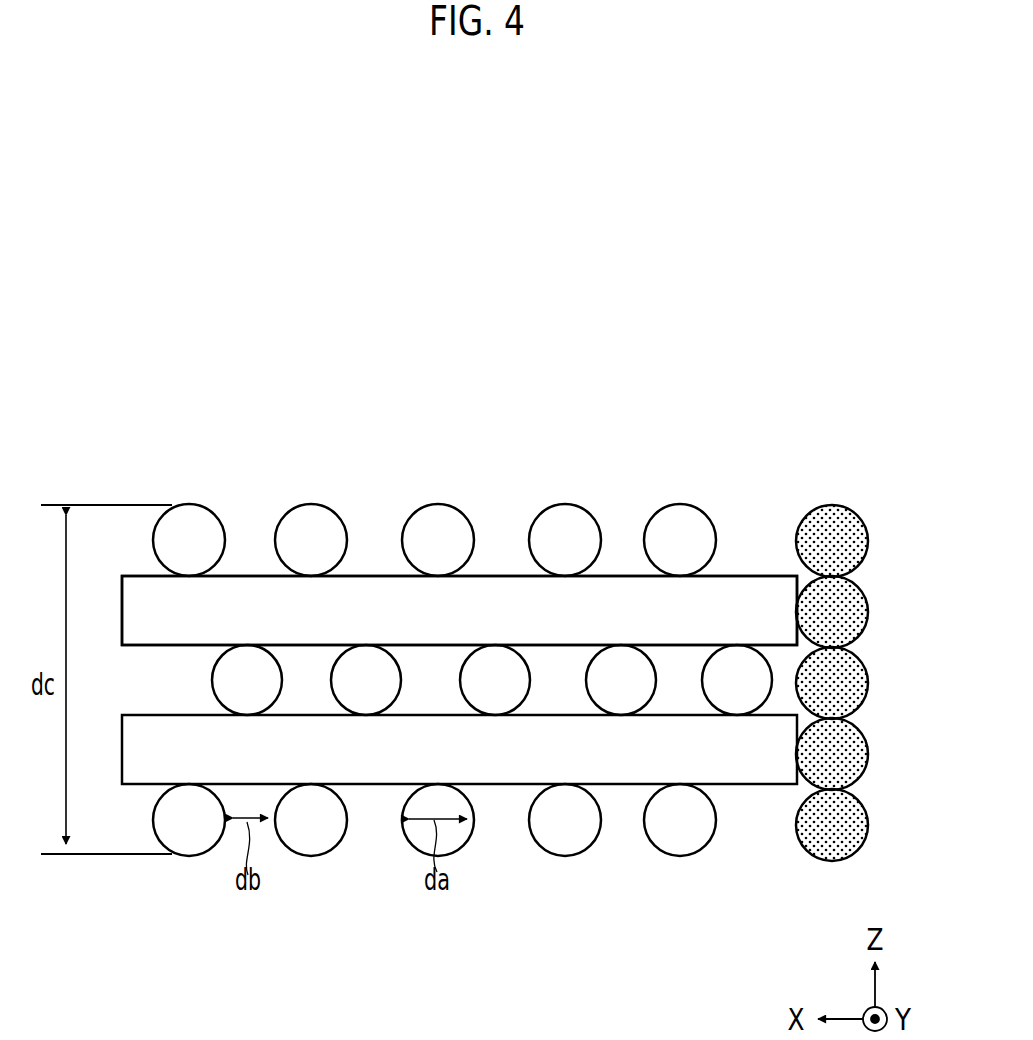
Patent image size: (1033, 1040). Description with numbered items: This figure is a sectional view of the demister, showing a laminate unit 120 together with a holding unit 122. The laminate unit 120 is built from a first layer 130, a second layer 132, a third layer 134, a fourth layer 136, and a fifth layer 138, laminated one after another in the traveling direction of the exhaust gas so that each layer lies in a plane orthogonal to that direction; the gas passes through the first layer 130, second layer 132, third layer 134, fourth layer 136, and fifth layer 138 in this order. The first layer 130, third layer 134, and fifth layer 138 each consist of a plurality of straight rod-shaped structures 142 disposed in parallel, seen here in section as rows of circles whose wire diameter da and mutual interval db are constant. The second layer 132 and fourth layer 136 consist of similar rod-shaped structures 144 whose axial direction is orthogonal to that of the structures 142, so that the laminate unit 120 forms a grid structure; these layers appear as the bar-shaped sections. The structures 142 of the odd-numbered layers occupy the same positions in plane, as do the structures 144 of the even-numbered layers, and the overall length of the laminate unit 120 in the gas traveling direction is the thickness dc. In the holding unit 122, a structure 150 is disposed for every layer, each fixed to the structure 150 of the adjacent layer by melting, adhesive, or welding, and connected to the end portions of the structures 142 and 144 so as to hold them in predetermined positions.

The laminate unit 120 is at (537, 466).
The holding unit 122 is at (842, 480).
The first layer 130 is at (307, 820).
The second layer 132 is at (375, 750).
The third layer 134 is at (235, 682).
The fourth layer 136 is at (252, 600).
The fifth layer 138 is at (372, 505).
The structure 142 is at (680, 535).
The structure 144 is at (623, 600).
The structure 150 is at (840, 543).